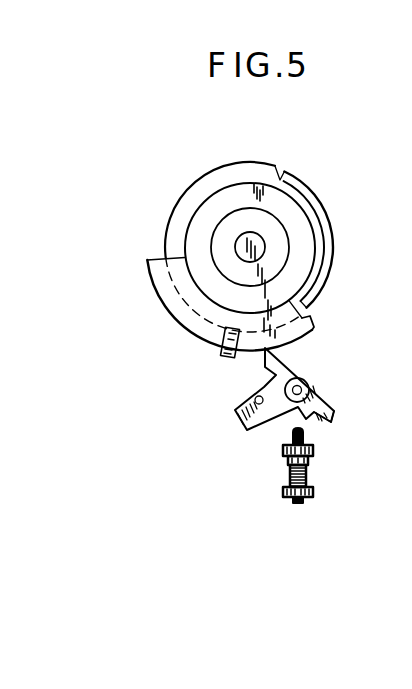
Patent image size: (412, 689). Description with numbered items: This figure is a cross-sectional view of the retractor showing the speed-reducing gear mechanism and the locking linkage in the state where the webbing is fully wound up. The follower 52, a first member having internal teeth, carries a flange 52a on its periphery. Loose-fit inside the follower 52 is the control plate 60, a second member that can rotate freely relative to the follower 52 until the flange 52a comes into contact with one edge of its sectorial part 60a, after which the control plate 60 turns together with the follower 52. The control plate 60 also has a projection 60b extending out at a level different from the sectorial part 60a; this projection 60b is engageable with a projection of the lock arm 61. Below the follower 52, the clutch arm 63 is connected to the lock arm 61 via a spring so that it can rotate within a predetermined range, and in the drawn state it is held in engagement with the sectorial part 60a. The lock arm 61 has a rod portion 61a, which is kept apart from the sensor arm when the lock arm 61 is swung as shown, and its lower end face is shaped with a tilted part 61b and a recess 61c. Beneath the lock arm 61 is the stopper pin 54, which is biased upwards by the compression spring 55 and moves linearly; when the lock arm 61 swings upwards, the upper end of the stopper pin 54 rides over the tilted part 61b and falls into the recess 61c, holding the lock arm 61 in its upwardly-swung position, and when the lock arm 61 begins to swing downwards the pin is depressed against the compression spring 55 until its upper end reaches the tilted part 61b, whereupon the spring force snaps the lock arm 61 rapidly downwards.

The follower 52 is at (257, 167).
The flange of the follower 52a is at (314, 204).
The stopper pin 54 is at (287, 458).
The compression spring 55 is at (284, 489).
The control plate 60 is at (190, 299).
The sectorial part 60a is at (314, 323).
The projection of the control plate 60b is at (221, 350).
The lock arm 61 is at (243, 425).
The rod portion of the lock arm 61a is at (255, 399).
The tilted part 61b is at (316, 428).
The recess 61c is at (334, 418).
The clutch arm 63 is at (293, 377).